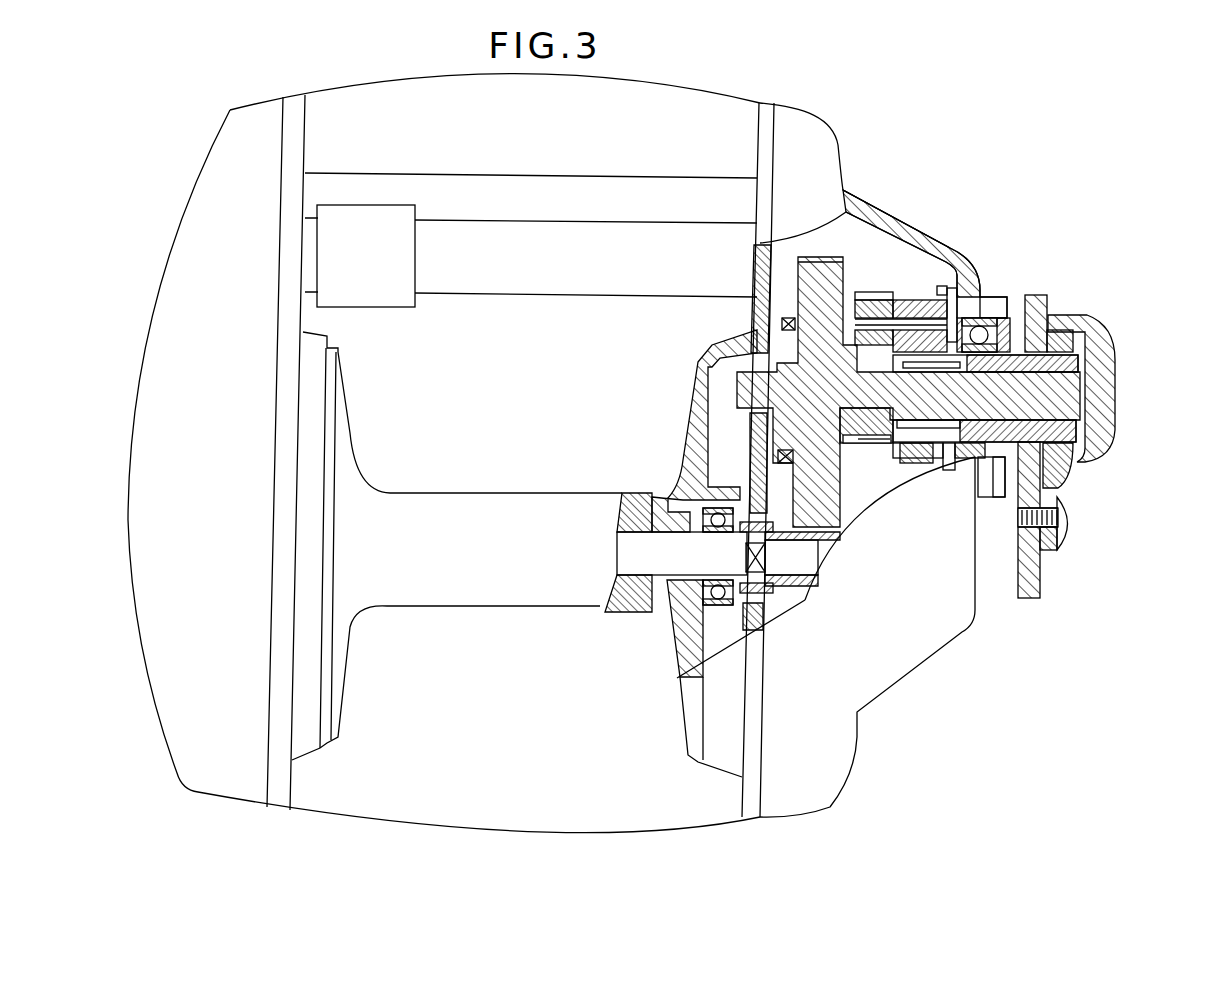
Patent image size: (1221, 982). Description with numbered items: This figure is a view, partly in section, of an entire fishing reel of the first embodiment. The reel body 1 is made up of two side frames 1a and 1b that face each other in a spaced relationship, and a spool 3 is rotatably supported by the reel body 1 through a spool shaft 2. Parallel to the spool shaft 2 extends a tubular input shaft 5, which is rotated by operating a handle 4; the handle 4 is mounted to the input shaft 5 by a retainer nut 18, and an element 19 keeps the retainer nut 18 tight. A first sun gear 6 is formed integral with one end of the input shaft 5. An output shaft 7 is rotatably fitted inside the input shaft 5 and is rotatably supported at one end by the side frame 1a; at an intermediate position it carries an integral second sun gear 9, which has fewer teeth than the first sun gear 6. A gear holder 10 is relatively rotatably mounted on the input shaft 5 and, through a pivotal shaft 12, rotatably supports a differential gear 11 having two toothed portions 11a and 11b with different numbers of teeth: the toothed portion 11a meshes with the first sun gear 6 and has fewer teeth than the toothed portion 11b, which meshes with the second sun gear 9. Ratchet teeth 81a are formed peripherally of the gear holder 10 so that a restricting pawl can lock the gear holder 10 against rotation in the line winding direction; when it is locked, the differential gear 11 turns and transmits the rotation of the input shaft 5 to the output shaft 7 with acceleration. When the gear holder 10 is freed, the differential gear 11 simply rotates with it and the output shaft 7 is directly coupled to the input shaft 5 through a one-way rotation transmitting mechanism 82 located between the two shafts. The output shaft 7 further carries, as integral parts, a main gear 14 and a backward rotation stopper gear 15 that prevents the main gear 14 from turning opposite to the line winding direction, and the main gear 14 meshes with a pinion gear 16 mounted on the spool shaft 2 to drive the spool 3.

The reel body 1 is at (773, 105).
The side frame 1a is at (837, 152).
The side frame 1b is at (248, 110).
The spool shaft 2 is at (637, 537).
The spool 3 is at (548, 493).
The handle 4 is at (1033, 580).
The input shaft 5 is at (1013, 350).
The first sun gear 6 is at (918, 477).
The output shaft 7 is at (1000, 497).
The second sun gear 9 is at (863, 447).
The gear holder 10 is at (950, 307).
The differential gear 11 is at (914, 254).
The toothed portion 11a is at (882, 290).
The toothed portion 11b is at (873, 292).
The pivotal shaft 12 is at (957, 250).
The main gear 14 is at (828, 257).
The backward rotation stopper gear 15 is at (775, 323).
The pinion gear 16 is at (805, 600).
The retainer nut 18 is at (1080, 460).
The element for keeping the retainer nut tight 19 is at (1105, 330).
The ratchet teeth 81a is at (990, 260).
The one-way rotation transmitting mechanism 82 is at (948, 468).